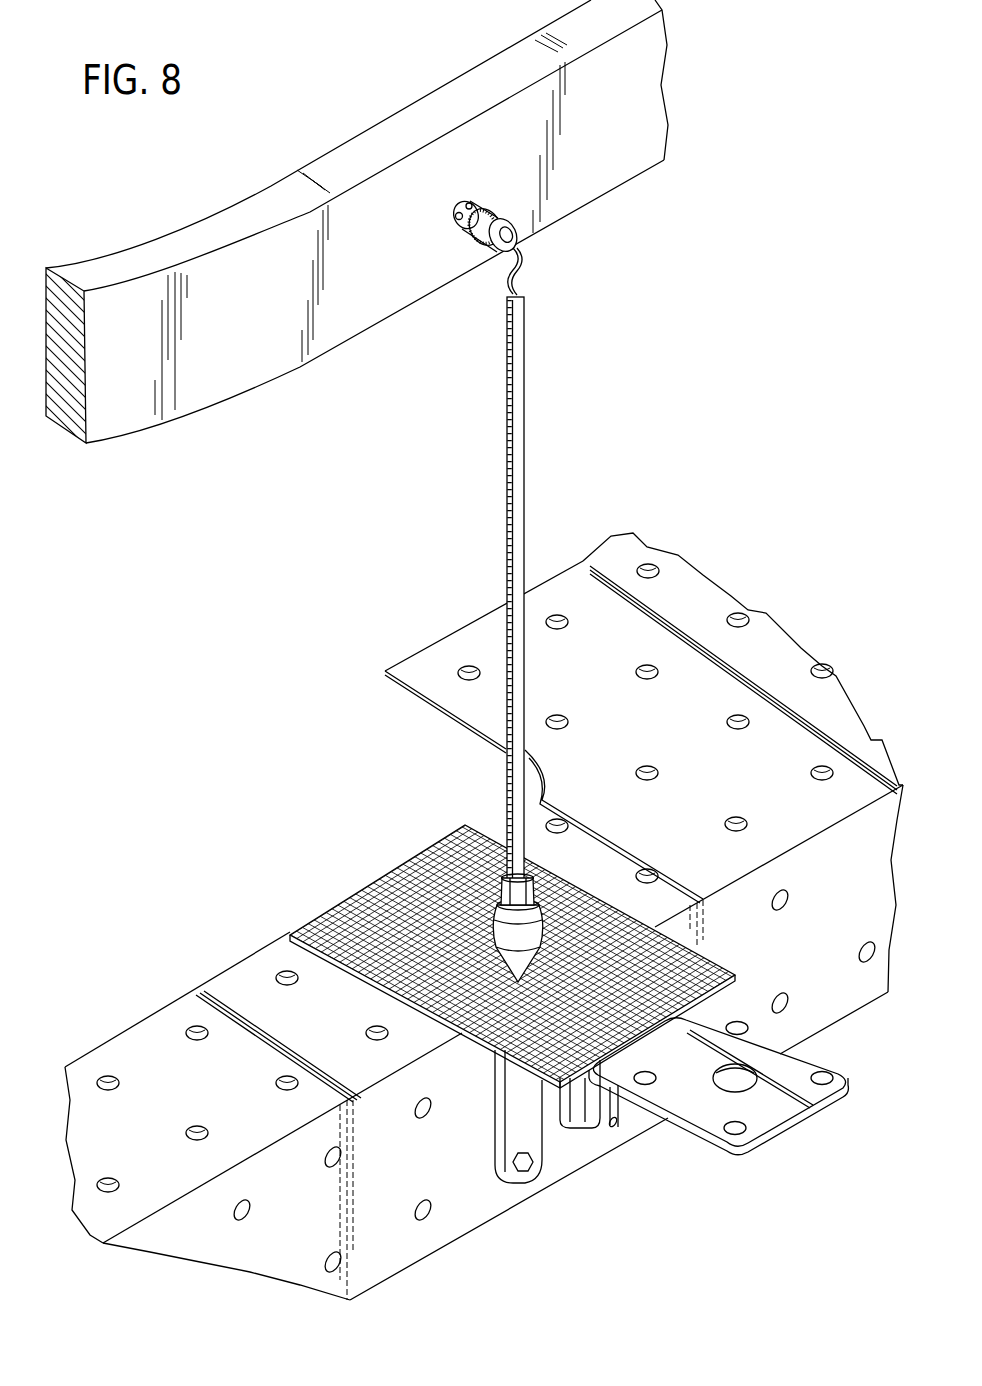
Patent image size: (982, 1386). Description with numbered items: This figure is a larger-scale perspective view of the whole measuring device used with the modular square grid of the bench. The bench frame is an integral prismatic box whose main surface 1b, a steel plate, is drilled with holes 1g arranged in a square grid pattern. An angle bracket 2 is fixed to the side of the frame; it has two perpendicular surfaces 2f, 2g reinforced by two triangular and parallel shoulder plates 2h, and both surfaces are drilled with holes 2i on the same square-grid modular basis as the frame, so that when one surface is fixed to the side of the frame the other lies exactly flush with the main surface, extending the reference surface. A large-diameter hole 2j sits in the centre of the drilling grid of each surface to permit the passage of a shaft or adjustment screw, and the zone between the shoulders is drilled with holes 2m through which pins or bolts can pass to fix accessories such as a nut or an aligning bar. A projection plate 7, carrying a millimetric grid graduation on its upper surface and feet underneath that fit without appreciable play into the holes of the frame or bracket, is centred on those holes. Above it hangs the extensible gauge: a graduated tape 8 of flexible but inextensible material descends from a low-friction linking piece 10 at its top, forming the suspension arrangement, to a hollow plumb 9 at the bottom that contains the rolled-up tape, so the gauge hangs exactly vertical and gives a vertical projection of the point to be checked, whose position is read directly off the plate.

The main surface plate 1b is at (484, 893).
The holes 1g is at (818, 668).
The angle bracket 2 is at (670, 1092).
The perpendicular surface 2f is at (523, 1107).
The perpendicular surface 2g is at (763, 1113).
The shoulder plate 2h is at (634, 1132).
The holes 2i is at (735, 1022).
The large-diameter hole 2j is at (737, 1086).
The holes 2m is at (578, 1113).
The projection plate 7 is at (383, 950).
The graduated tape 8 is at (511, 444).
The hollow plumb 9 is at (533, 927).
The linking piece 10 is at (510, 286).